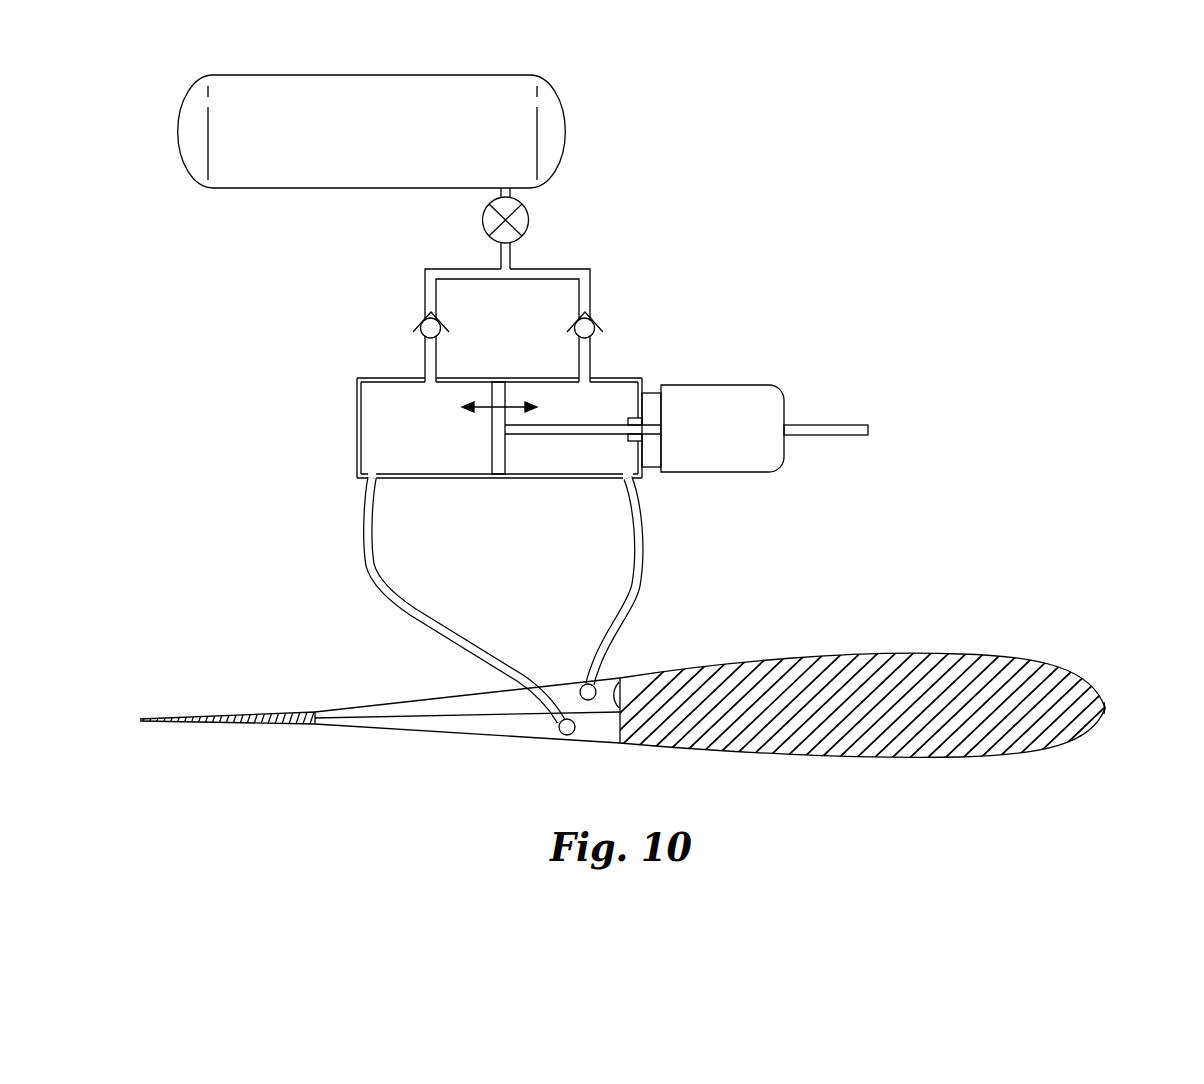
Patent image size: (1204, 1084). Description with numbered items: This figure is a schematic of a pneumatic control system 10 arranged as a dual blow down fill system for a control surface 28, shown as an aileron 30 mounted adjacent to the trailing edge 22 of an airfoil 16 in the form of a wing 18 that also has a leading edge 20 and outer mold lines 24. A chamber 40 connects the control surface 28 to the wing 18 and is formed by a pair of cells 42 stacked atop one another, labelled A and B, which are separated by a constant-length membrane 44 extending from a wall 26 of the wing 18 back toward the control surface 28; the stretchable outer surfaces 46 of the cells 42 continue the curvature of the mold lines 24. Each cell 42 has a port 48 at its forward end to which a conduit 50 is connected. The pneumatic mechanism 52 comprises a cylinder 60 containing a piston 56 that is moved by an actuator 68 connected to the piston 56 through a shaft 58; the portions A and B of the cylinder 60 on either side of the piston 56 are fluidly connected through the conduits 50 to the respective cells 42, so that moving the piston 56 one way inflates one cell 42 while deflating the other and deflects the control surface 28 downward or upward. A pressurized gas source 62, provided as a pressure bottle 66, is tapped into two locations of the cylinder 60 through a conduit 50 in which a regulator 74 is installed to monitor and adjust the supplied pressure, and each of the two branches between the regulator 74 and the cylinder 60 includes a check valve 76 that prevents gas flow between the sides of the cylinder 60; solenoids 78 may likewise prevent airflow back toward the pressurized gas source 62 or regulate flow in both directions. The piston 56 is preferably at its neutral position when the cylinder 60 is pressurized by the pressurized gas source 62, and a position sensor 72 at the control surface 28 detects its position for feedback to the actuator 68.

The pneumatic control system 10 is at (237, 573).
The airfoil 16 is at (871, 708).
The wing 18 is at (871, 708).
The leading edge 20 is at (1106, 709).
The trailing edge 22 is at (141, 724).
The mold lines 24 is at (972, 656).
The wall 26 is at (618, 732).
The control surface 28 is at (378, 729).
The aileron 30 is at (378, 729).
The chamber 40 is at (372, 706).
The cell 42 is at (487, 700).
The membrane 44 is at (410, 722).
The outer surfaces 46 is at (332, 706).
The ports 48 is at (581, 687).
The conduits 50 is at (663, 495).
The pneumatic mechanism 52 is at (576, 50).
The piston 56 is at (494, 470).
The shaft 58 is at (538, 436).
The cylinder 60 is at (479, 452).
The pressurized gas source 62 is at (372, 106).
The pressure bottle 66 is at (300, 72).
The actuator 68 is at (713, 443).
The position sensor 72 is at (619, 708).
The regulator 74 is at (528, 216).
The check valve 76 is at (510, 319).
The solenoid 78 is at (418, 322).